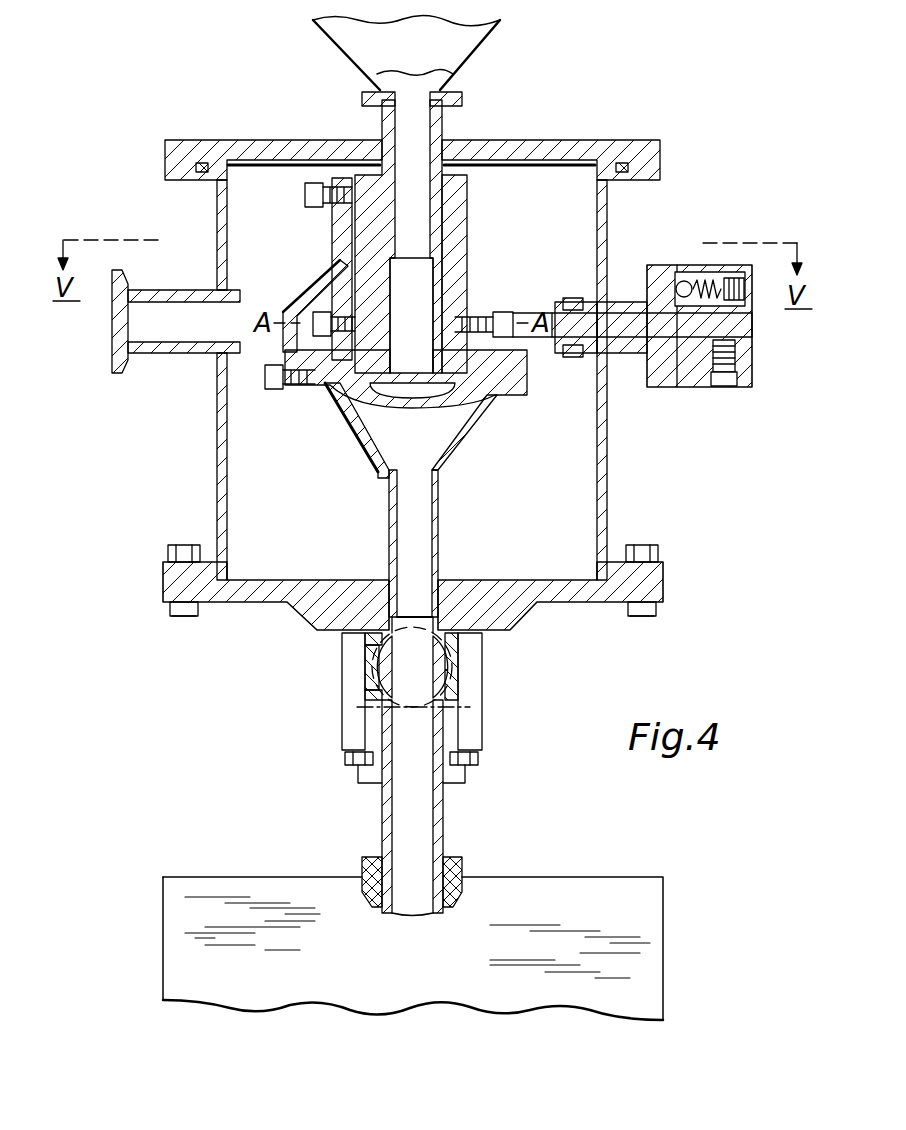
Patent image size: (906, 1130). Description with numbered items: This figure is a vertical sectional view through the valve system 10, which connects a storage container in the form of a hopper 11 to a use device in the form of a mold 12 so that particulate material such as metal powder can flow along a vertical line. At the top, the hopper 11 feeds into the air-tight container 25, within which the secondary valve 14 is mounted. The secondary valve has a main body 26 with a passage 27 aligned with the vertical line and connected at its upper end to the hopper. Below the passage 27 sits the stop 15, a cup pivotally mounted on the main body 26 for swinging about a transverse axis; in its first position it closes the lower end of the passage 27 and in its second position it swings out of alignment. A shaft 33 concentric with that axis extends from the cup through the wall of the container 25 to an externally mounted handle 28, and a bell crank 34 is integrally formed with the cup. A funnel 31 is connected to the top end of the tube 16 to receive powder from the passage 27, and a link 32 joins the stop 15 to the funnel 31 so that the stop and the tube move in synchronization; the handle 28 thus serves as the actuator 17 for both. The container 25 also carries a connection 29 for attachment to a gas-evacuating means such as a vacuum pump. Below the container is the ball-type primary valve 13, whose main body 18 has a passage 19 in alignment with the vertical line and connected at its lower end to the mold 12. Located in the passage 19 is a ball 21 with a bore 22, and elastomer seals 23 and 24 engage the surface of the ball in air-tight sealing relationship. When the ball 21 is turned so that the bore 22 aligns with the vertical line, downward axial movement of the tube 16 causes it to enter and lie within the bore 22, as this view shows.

The valve system 10 is at (565, 147).
The hopper 11 is at (484, 47).
The mold 12 is at (583, 892).
The primary valve 13 is at (472, 696).
The secondary valve 14 is at (464, 263).
The stop 15 is at (450, 395).
The tube 16 is at (440, 533).
The actuator 17 is at (655, 280).
The main body 18 is at (357, 665).
The passage 19 is at (426, 762).
The ball 21 is at (447, 672).
The bore 22 is at (432, 668).
The seal 23 is at (370, 634).
The seal 24 is at (360, 698).
The air-tight container 25 is at (610, 479).
The main body 26 is at (460, 197).
The passage 27 is at (428, 314).
The handle 28 is at (702, 372).
The connection 29 is at (183, 350).
The funnel 31 is at (360, 432).
The link 32 is at (308, 293).
The shaft 33 is at (583, 332).
The bell crank 34 is at (348, 231).